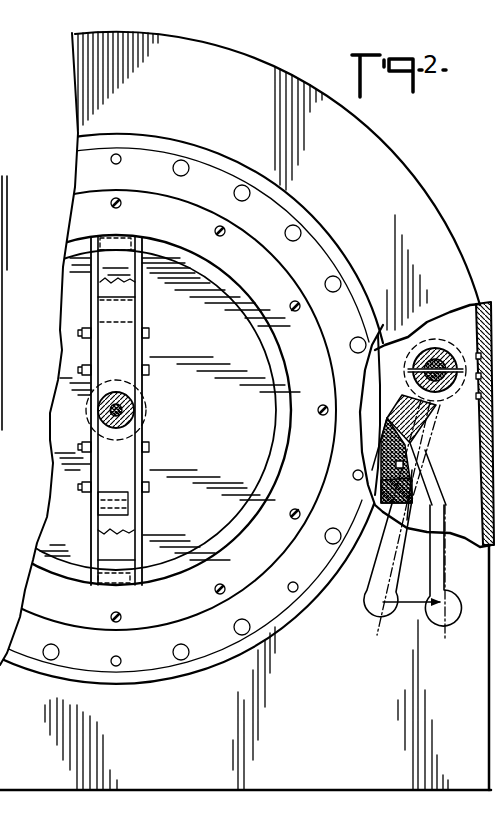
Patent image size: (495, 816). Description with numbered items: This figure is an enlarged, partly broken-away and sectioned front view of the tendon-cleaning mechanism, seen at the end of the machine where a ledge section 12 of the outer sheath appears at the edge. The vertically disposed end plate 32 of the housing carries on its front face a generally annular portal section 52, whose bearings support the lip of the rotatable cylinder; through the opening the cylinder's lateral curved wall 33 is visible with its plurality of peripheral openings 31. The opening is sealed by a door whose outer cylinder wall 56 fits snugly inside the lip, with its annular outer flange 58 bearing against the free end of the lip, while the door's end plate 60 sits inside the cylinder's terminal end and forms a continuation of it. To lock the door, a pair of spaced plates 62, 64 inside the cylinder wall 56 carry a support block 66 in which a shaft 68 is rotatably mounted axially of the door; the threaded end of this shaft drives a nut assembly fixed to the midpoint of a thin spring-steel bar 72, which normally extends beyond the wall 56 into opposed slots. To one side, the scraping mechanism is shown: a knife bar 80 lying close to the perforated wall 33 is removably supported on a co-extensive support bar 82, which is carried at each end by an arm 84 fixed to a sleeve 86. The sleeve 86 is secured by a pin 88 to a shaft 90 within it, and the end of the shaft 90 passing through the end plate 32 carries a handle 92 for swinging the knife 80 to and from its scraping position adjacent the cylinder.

The ledge section 12 is at (8, 282).
The peripheral opening 31 is at (366, 379).
The end plate 32 is at (262, 74).
The wall 33 is at (380, 430).
The portal section 52 is at (205, 170).
The outer cylinder wall 56 is at (272, 322).
The annular outer flange 58 is at (157, 248).
The end plate 60 is at (226, 400).
The plate 62 is at (93, 293).
The plate 64 is at (138, 300).
The support block 66 is at (125, 326).
The shaft 68 is at (122, 412).
The bar 72 is at (111, 218).
The knife bar 80 is at (408, 494).
The support bar 82 is at (380, 502).
The arm 84 is at (410, 452).
The sleeve 86 is at (406, 311).
The pin 88 is at (441, 356).
The shaft 90 is at (442, 389).
The handle 92 is at (425, 618).